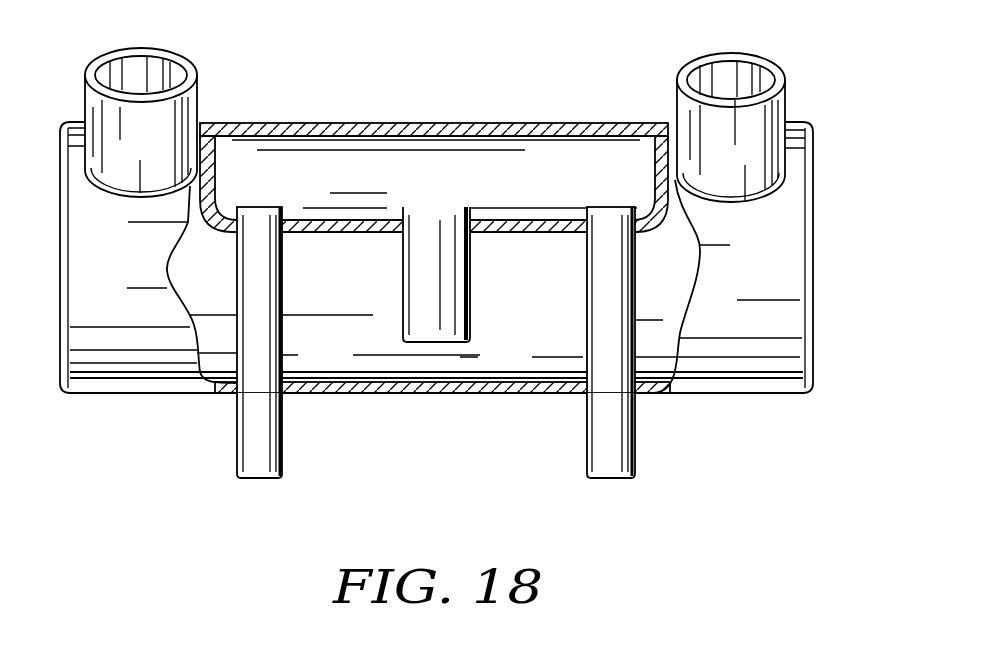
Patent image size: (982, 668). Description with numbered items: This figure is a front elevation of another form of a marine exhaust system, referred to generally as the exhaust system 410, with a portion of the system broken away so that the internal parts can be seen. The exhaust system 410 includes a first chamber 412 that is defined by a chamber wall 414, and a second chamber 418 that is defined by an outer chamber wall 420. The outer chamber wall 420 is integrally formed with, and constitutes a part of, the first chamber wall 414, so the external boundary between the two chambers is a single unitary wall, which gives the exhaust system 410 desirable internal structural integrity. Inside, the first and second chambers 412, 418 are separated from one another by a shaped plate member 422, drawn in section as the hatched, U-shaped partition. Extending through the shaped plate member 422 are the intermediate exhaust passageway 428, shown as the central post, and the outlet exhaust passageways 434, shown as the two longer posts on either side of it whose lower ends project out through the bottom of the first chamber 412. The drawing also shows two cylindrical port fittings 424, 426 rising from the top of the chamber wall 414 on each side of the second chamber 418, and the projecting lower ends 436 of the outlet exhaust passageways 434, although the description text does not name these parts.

The exhaust system 410 is at (469, 251).
The first chamber 412 is at (527, 369).
The chamber wall 414 is at (798, 203).
The second chamber 418 is at (540, 191).
The outer chamber wall 420 is at (450, 122).
The shaped plate member 422 is at (215, 168).
The outlet port 424 is at (772, 62).
The inlet port 426 is at (178, 62).
The intermediate exhaust passageway 428 is at (472, 282).
The outlet exhaust passageways 434 is at (634, 286).
The post end 436 is at (282, 456).